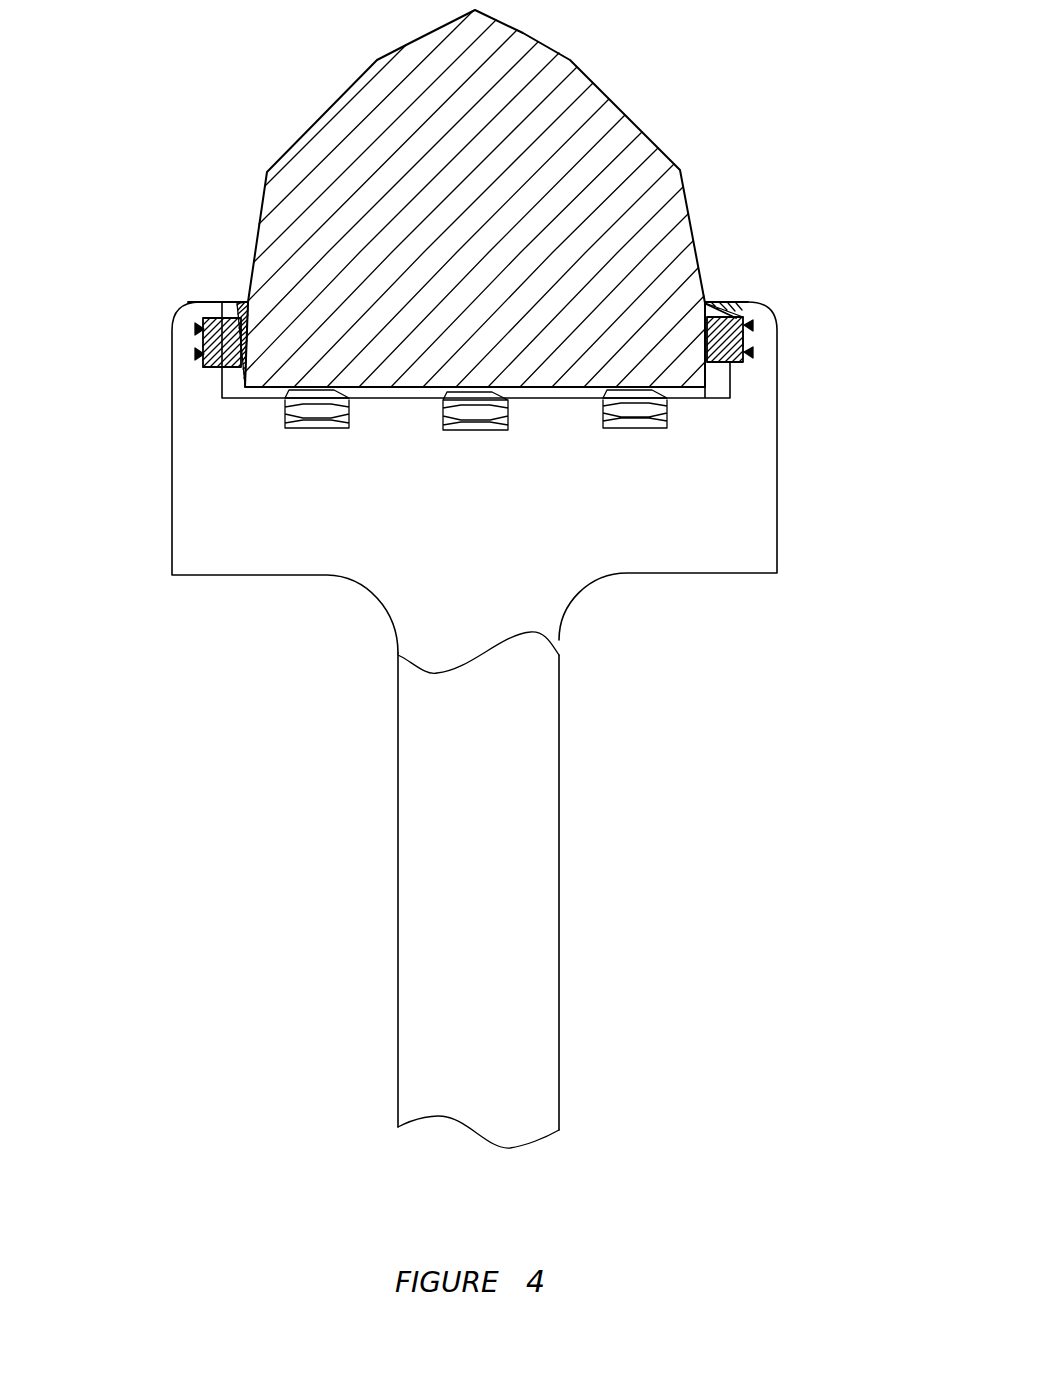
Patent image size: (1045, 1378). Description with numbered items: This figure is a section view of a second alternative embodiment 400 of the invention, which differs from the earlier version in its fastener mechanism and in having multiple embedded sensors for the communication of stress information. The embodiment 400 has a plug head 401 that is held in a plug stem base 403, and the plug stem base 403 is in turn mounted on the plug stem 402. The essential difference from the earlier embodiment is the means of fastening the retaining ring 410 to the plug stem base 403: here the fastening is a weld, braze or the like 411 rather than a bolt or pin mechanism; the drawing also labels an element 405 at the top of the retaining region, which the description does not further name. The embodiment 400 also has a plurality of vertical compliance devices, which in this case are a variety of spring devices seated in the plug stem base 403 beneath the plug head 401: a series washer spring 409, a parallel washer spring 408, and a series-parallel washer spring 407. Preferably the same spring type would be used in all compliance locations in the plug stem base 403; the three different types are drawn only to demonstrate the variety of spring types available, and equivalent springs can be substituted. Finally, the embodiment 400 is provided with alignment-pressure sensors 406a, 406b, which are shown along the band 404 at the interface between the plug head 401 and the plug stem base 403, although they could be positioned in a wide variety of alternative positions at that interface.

The embodiment 400 is at (750, 678).
The plug head 401 is at (658, 230).
The plug stem 402 is at (542, 913).
The plug stem base 403 is at (682, 558).
The band 404 is at (203, 345).
The cap plate 405 is at (220, 302).
The alignment-pressure sensor 406a is at (199, 329).
The alignment-pressure sensor 406b is at (199, 354).
The series-parallel washer spring 407 is at (660, 417).
The parallel washer spring 408 is at (483, 430).
The series washer spring 409 is at (310, 428).
The retaining ring 410 is at (745, 308).
The weld, braze or the like 411 is at (760, 349).